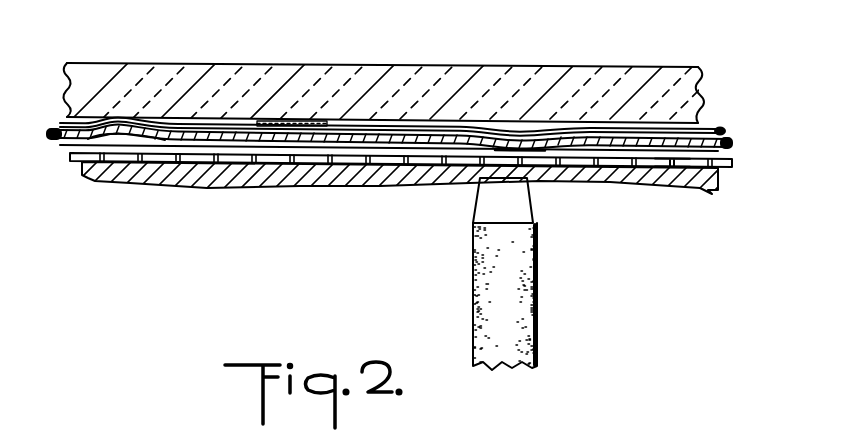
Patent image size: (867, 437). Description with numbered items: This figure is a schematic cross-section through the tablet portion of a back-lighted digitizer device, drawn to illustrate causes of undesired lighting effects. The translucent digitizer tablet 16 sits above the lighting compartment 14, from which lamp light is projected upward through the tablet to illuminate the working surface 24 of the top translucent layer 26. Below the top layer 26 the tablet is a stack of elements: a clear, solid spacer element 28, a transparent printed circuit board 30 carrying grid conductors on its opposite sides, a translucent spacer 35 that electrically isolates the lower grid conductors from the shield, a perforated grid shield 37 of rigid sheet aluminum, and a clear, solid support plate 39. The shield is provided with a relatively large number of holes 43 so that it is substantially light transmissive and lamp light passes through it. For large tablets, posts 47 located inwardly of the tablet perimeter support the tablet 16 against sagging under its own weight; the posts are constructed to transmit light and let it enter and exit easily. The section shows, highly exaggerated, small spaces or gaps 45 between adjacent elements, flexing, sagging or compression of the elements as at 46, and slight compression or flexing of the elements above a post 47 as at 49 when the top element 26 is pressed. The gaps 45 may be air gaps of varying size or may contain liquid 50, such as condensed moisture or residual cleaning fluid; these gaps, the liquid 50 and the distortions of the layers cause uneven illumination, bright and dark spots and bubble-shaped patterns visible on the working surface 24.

The lighting compartment 14 is at (252, 260).
The translucent digitizer tablet 16 is at (437, 62).
The working surface 24 is at (610, 66).
The top translucent layer 26 is at (700, 77).
The spacer element 28 is at (718, 138).
The transparent printed circuit board 30 is at (727, 143).
The translucent spacer 35 is at (720, 150).
The perforated grid shield 37 is at (733, 167).
The support plate 39 is at (718, 187).
The holes 43 is at (677, 155).
The spaces or gaps 45 is at (116, 119).
The flexing, sagging, warping or compression region 46 is at (133, 115).
The posts 47 is at (537, 262).
The compression or flexing region at post 49 is at (513, 120).
The liquid 50 is at (293, 119).